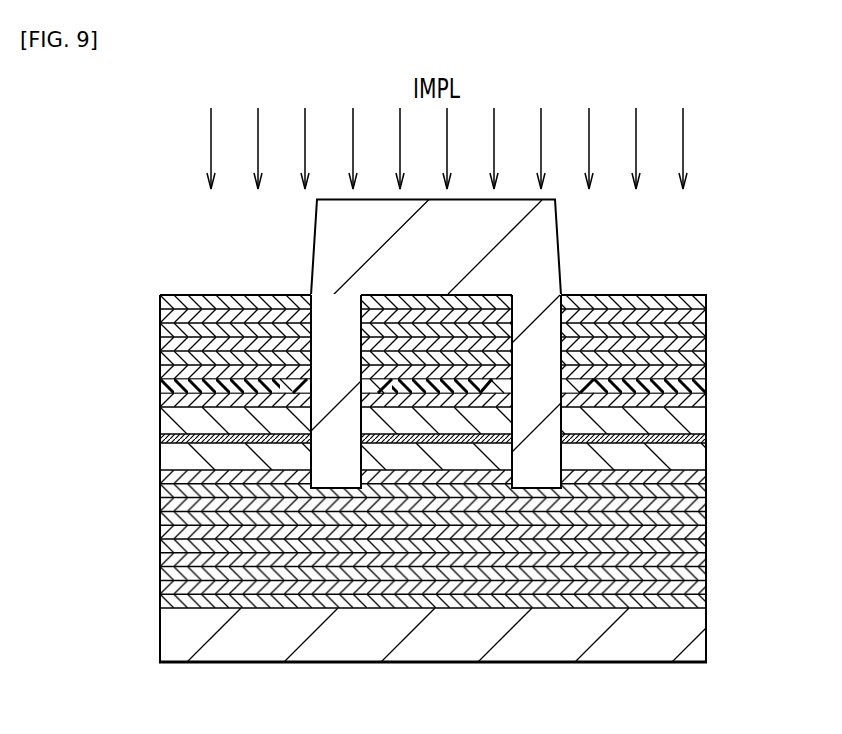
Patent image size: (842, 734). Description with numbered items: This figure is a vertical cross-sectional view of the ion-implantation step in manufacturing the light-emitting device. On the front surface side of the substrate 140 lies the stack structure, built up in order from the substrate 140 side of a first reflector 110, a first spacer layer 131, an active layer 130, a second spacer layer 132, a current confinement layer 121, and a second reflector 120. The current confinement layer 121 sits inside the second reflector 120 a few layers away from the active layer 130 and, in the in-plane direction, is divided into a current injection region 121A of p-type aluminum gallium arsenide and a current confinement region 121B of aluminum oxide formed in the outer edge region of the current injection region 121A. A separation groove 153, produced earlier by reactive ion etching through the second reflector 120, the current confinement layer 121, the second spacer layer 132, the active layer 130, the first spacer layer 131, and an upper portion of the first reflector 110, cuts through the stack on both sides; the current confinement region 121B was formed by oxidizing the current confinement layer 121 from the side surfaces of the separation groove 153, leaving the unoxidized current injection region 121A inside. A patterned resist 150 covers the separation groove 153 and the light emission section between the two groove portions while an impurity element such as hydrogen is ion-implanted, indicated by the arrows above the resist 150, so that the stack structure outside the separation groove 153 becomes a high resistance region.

The first reflector 110 is at (718, 473).
The second reflector 120 is at (718, 295).
The current confinement layer 121 is at (165, 383).
The current injection region 121A is at (438, 393).
The current confinement region 121B is at (572, 393).
The active layer 130 is at (692, 437).
The first spacer layer 131 is at (690, 460).
The second spacer layer 132 is at (693, 421).
The substrate 140 is at (693, 633).
The resist 150 is at (552, 221).
The separation groove 153 is at (540, 318).